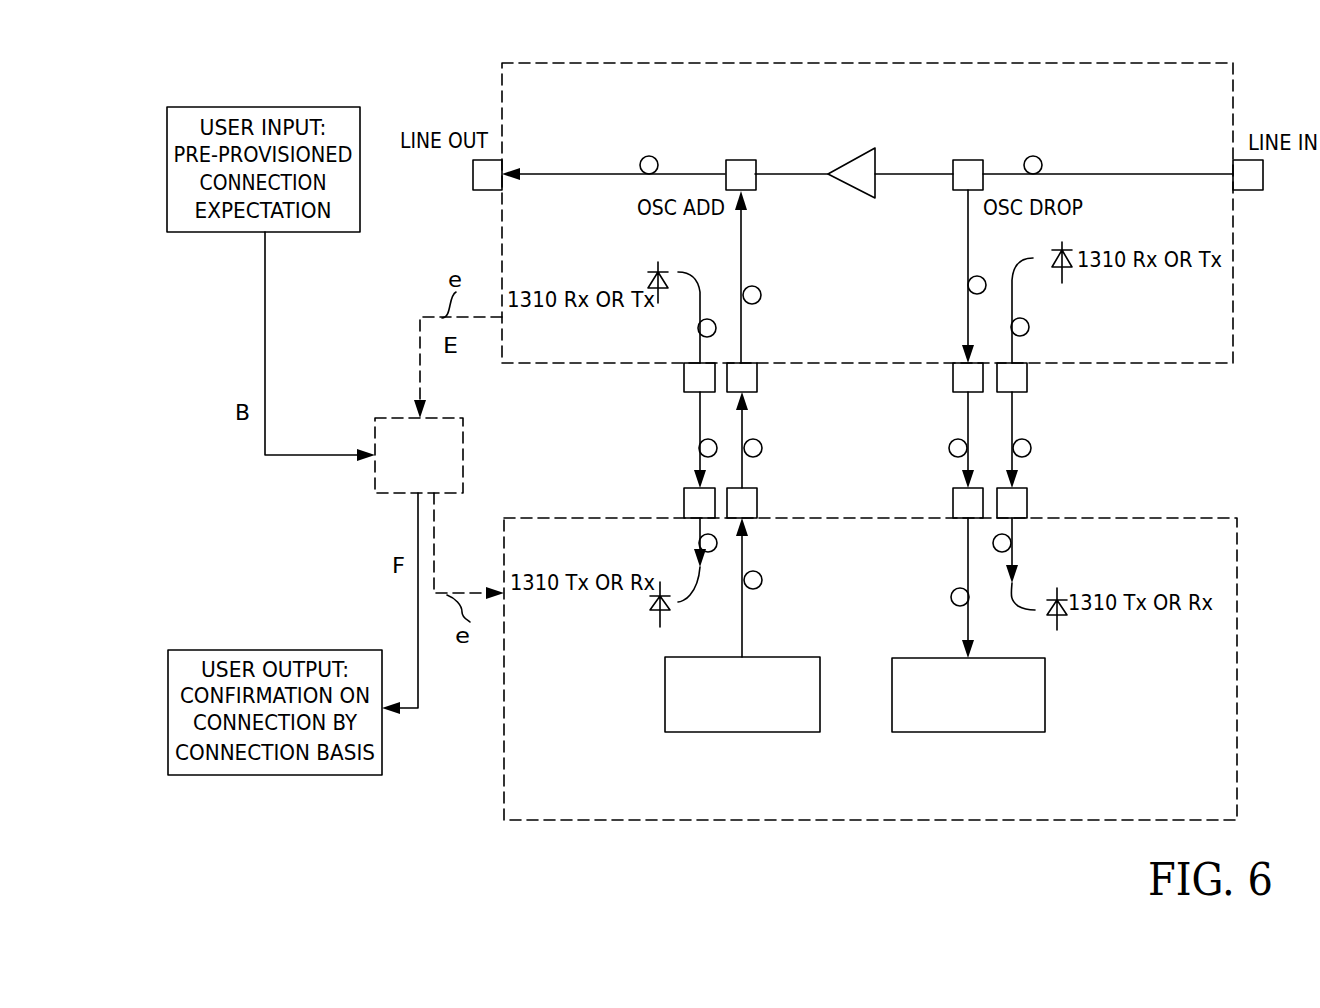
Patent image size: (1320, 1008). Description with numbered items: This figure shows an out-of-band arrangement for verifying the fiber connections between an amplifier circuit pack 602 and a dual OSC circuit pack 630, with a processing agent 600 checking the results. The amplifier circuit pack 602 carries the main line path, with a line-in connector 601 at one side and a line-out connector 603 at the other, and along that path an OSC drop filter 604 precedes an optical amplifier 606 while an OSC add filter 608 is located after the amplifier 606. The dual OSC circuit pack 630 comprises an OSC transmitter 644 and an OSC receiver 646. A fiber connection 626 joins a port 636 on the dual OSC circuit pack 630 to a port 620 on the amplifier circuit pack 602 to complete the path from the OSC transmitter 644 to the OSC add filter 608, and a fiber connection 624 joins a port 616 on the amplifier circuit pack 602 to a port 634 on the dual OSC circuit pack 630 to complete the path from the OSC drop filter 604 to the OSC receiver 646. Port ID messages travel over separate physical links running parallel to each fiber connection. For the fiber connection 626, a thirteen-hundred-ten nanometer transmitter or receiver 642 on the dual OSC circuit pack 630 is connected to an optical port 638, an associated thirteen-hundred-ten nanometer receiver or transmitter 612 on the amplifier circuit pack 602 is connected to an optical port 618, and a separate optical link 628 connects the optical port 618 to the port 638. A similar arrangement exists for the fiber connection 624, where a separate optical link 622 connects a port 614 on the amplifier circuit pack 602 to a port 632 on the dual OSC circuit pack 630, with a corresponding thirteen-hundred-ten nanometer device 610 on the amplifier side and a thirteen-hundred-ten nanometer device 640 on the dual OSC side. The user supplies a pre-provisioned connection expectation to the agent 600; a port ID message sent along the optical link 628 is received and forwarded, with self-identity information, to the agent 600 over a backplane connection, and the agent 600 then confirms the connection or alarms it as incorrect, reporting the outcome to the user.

The processing agent 600 is at (437, 482).
The line in connector 601 is at (1263, 175).
The amplifier circuit pack 602 is at (1207, 95).
The line out connector 603 is at (473, 173).
The OSC drop filter 604 is at (968, 160).
The optical amplifier 606 is at (853, 152).
The OSC add filter 608 is at (740, 160).
The 1310 nm receiver (Rx) or transmitter (Tx) 610 is at (1062, 270).
The 1310 nm receiver (Rx) or transmitter (Tx) 612 is at (658, 268).
The port 614 is at (1027, 380).
The port 616 is at (953, 381).
The optical port 618 is at (684, 381).
The port 620 is at (757, 380).
The separate optical link 622 is at (1012, 422).
The fiber connection 624 is at (968, 422).
The fiber connection 626 is at (742, 422).
The separate optical link 628 is at (700, 422).
The dual OSC circuit pack 630 is at (1210, 802).
The port 632 is at (1027, 496).
The port 634 is at (953, 496).
The port 636 is at (757, 496).
The optical port 638 is at (684, 496).
The 1310 nm transmitter (Tx) or receiver (Rx) 640 is at (1060, 618).
The 1310 nm transmitter (Tx) or receiver (Rx) 642 is at (660, 612).
The OSC transmitter (Tx) 644 is at (770, 732).
The OSC receiver (Rx) 646 is at (920, 732).